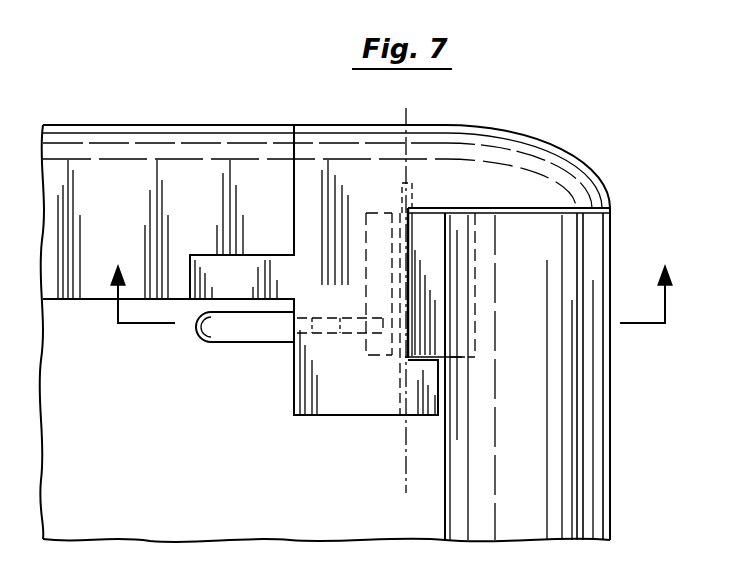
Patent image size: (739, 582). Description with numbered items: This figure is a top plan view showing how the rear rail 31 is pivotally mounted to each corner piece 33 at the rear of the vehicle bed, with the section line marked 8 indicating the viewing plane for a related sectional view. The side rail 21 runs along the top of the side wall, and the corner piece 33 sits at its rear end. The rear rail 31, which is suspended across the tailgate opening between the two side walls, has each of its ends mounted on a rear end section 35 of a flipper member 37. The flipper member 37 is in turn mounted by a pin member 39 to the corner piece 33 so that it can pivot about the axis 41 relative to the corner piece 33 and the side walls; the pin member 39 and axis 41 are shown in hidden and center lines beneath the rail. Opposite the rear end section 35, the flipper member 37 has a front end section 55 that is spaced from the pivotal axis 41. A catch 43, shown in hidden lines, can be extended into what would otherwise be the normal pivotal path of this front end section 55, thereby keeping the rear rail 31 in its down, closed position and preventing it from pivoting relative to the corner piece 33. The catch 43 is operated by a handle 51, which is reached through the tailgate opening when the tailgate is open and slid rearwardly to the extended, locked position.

The section line 8- 8 is at (390, 313).
The side rail 21 is at (187, 196).
The rear rail 31 is at (522, 453).
The corner piece 33 is at (541, 139).
The rear end section 35 is at (476, 287).
The flipper member 37 is at (418, 247).
The pin member 39 is at (402, 192).
The axis 41 is at (405, 118).
The catch 43 is at (358, 330).
The handle 51 is at (243, 345).
The front end section 55 is at (366, 268).